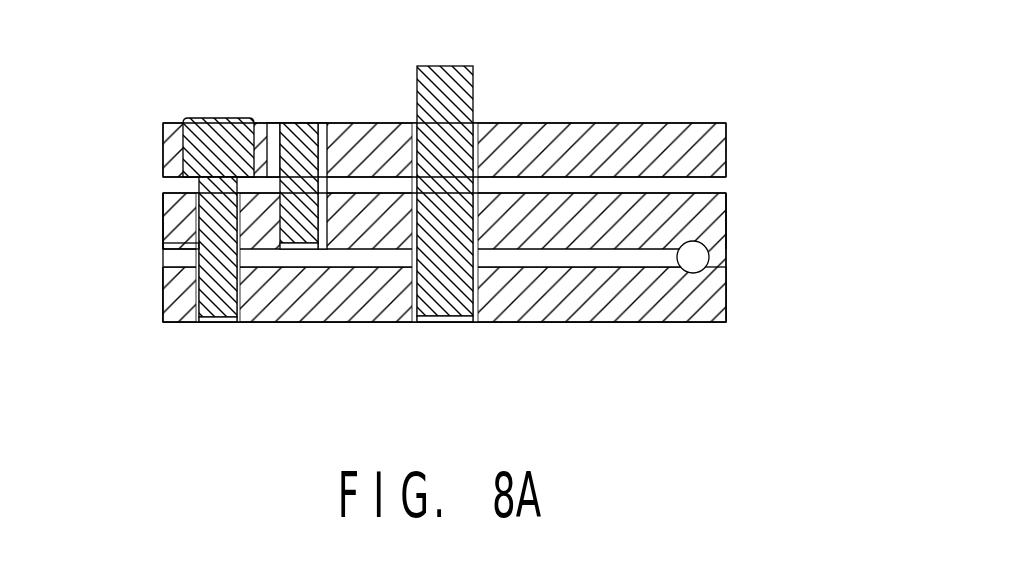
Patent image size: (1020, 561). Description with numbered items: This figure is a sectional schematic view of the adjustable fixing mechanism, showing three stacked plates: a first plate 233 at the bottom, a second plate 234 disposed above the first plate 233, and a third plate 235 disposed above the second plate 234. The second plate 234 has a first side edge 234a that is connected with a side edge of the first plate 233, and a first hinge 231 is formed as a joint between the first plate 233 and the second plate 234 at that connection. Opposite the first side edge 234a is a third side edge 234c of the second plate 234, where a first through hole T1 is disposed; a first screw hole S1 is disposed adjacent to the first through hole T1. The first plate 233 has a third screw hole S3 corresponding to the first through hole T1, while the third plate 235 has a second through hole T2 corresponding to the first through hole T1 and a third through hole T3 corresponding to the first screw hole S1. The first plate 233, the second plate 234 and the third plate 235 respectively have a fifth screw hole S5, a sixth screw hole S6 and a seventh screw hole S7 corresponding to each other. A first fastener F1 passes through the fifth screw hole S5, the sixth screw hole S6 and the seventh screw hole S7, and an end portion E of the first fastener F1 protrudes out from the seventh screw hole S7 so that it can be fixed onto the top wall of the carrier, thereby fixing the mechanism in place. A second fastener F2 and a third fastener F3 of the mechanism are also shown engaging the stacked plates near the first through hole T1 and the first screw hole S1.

The third plate 235 is at (707, 150).
The second plate 234 is at (620, 220).
The first side edge 234a is at (726, 213).
The third side edge 234c is at (163, 207).
The first plate 233 is at (696, 318).
The first hinge 231 is at (717, 257).
The end portion E is at (443, 90).
The first screw hole S1 is at (279, 222).
The third screw hole S3 is at (199, 292).
The fifth screw hole S5 is at (478, 284).
The sixth screw hole S6 is at (473, 217).
The seventh screw hole S7 is at (473, 157).
The first through hole T1 is at (190, 246).
The second through hole T2 is at (183, 155).
The third through hole T3 is at (328, 150).
The first fastener F1 is at (457, 302).
The second fastener F2 is at (219, 308).
The third fastener F3 is at (293, 130).